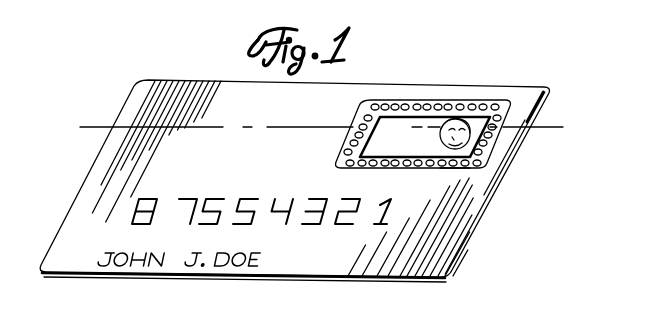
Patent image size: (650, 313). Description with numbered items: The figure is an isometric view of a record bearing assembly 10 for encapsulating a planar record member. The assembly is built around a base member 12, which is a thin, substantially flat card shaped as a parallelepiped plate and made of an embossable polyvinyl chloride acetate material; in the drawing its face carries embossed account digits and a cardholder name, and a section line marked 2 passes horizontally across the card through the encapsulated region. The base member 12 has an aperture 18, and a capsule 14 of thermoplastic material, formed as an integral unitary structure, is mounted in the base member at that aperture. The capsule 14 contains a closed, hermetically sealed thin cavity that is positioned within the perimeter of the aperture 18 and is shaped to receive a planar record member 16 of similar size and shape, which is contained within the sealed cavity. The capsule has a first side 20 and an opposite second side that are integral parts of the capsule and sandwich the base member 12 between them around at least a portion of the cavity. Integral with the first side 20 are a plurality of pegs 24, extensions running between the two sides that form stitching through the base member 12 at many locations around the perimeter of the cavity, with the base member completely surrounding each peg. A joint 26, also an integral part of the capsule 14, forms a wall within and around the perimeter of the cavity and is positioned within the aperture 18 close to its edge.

The section line 2- 2 is at (80, 126).
The record bearing assembly 10 is at (129, 78).
The base member 12 is at (469, 195).
The capsule 14 is at (412, 100).
The record member 16 is at (422, 118).
The aperture 18 is at (347, 139).
The first side 20 is at (453, 169).
The pegs 24 is at (510, 100).
The joint 26 is at (393, 104).